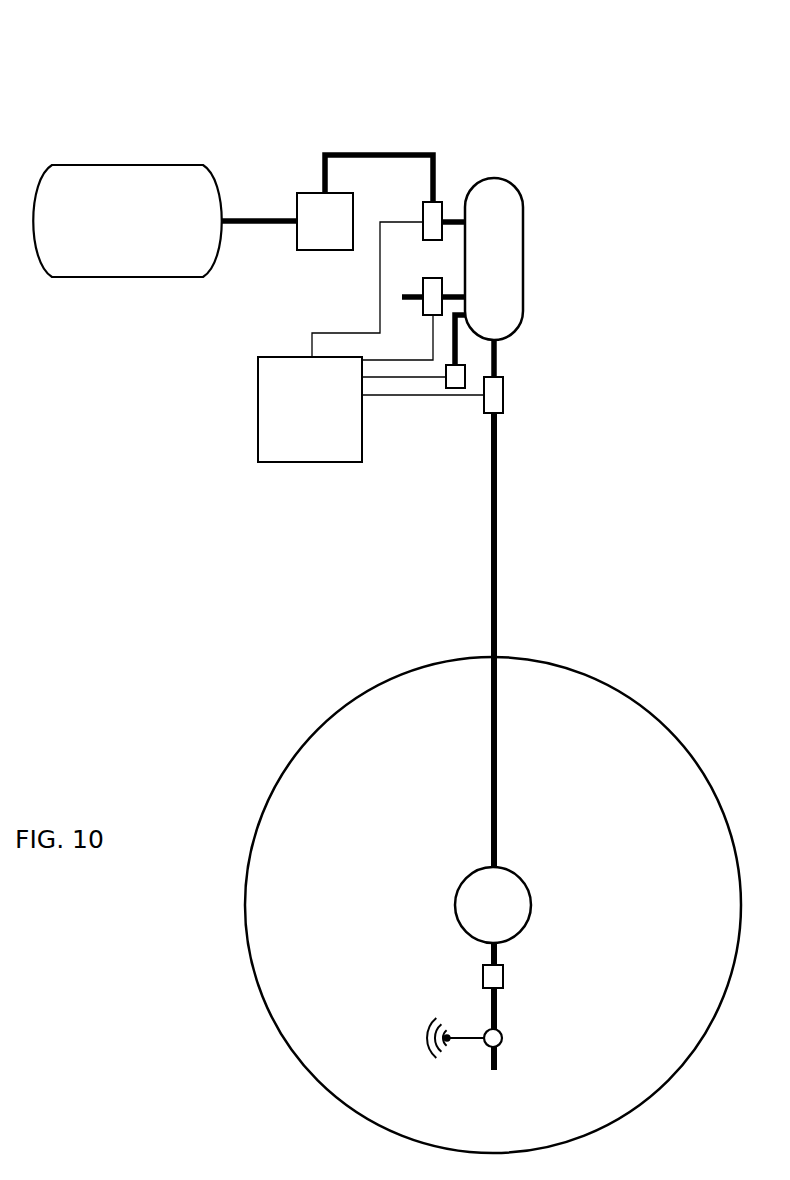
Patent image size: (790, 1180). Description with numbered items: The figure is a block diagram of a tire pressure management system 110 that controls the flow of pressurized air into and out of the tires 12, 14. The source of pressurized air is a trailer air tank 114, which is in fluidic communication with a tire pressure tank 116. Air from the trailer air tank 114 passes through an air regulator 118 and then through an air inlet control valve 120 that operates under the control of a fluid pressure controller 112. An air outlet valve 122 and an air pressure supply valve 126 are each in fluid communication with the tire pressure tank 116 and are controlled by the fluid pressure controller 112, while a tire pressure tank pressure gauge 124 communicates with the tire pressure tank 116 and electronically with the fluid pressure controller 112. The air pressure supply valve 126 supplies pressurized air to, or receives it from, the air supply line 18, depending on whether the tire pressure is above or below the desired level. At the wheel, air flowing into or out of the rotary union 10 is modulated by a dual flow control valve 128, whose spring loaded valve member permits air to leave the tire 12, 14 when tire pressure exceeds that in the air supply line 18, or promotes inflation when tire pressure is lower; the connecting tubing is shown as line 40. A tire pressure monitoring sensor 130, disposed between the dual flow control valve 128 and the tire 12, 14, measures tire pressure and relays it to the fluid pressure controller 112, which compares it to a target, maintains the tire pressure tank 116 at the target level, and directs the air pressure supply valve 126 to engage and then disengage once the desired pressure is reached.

The tire pressure management system 110 is at (440, 108).
The trailer air tank 114 is at (107, 278).
The air regulator 118 is at (320, 252).
The air inlet control valve 120 is at (442, 202).
The tire pressure tank 116 is at (523, 252).
The air outlet valve 122 is at (423, 287).
The tire pressure tank pressure gauge 124 is at (465, 373).
The air pressure supply valve 126 is at (503, 410).
The fluid pressure controller 112 is at (277, 437).
The air supply line 18 is at (497, 557).
The tire 12 is at (428, 905).
The tire 14 is at (245, 928).
The rotary union 10 is at (520, 875).
The tubing 40 is at (490, 953).
The dual flow control valve 128 is at (503, 968).
The tire pressure monitoring sensor 130 is at (502, 1035).